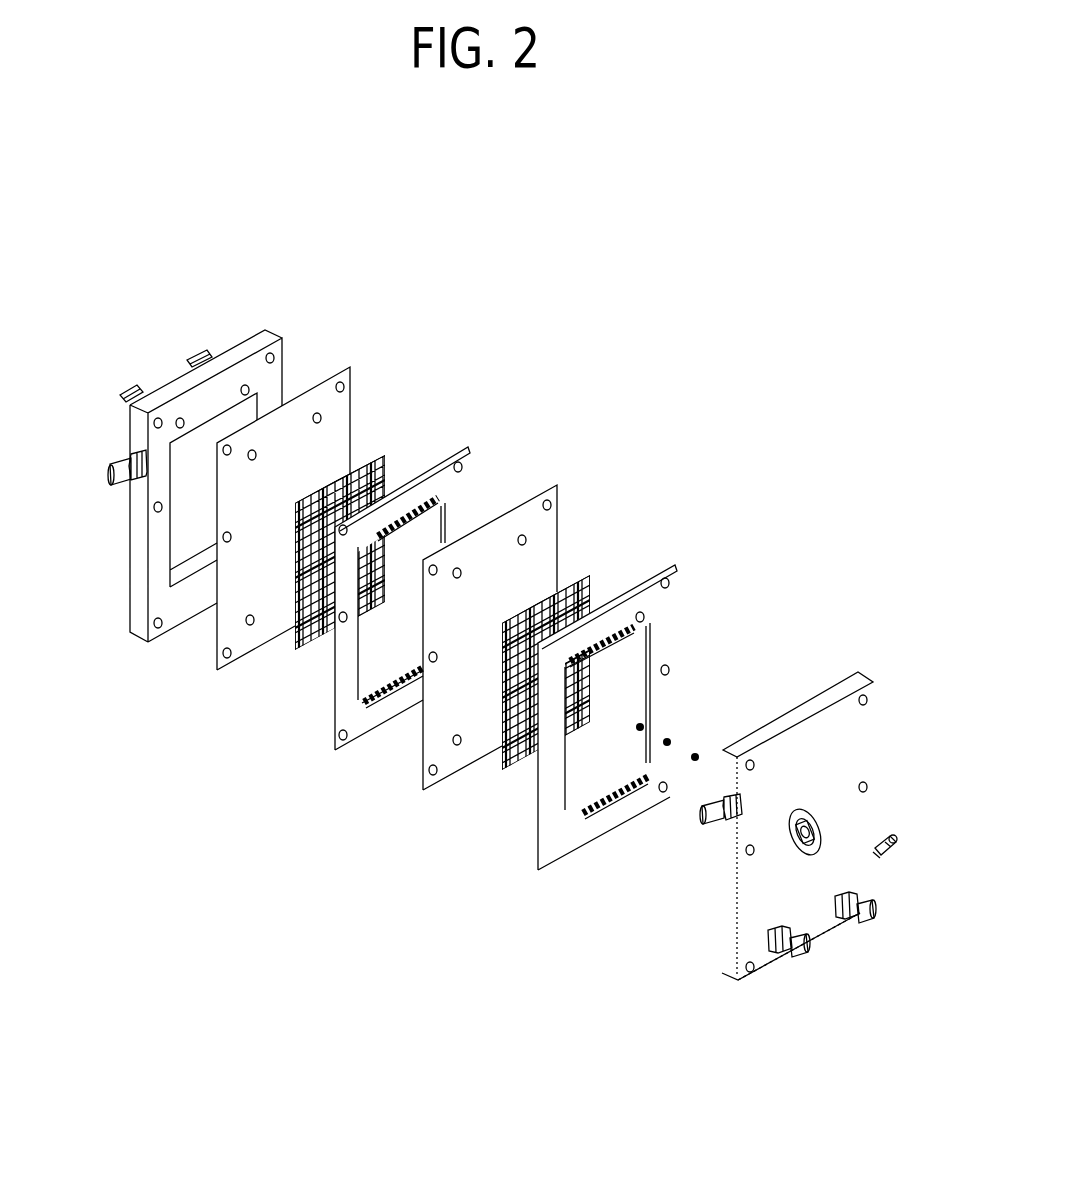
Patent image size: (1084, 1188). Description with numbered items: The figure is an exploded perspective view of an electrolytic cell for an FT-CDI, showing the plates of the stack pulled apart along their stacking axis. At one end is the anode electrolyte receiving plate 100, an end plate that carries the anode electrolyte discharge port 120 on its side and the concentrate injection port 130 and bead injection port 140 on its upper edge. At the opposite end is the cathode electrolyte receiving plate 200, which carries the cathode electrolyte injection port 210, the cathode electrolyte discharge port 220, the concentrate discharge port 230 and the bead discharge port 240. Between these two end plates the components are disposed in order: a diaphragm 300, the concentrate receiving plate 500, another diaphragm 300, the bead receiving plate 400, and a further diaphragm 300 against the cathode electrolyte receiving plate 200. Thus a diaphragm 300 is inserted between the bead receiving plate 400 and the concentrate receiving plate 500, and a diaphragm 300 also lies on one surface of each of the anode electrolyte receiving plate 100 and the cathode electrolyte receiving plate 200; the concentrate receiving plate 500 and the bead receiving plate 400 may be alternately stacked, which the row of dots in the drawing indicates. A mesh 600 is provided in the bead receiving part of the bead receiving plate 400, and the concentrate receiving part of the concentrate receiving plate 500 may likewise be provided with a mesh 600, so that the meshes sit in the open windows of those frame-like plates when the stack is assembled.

The anode electrolyte receiving plate 100 is at (258, 333).
The anode electrolyte discharge port 120 is at (118, 462).
The concentrate injection port 130 is at (190, 352).
The bead injection port 140 is at (128, 392).
The cathode electrolyte receiving plate 200 is at (802, 703).
The cathode electrolyte injection port 210 is at (887, 830).
The cathode electrolyte discharge port 220 is at (702, 824).
The concentrate discharge port 230 is at (791, 958).
The bead discharge port 240 is at (855, 925).
The diaphragm 300 is at (346, 392).
The bead receiving plate 400 is at (655, 567).
The concentrate receiving plate 500 is at (452, 450).
The mesh 600 is at (378, 455).